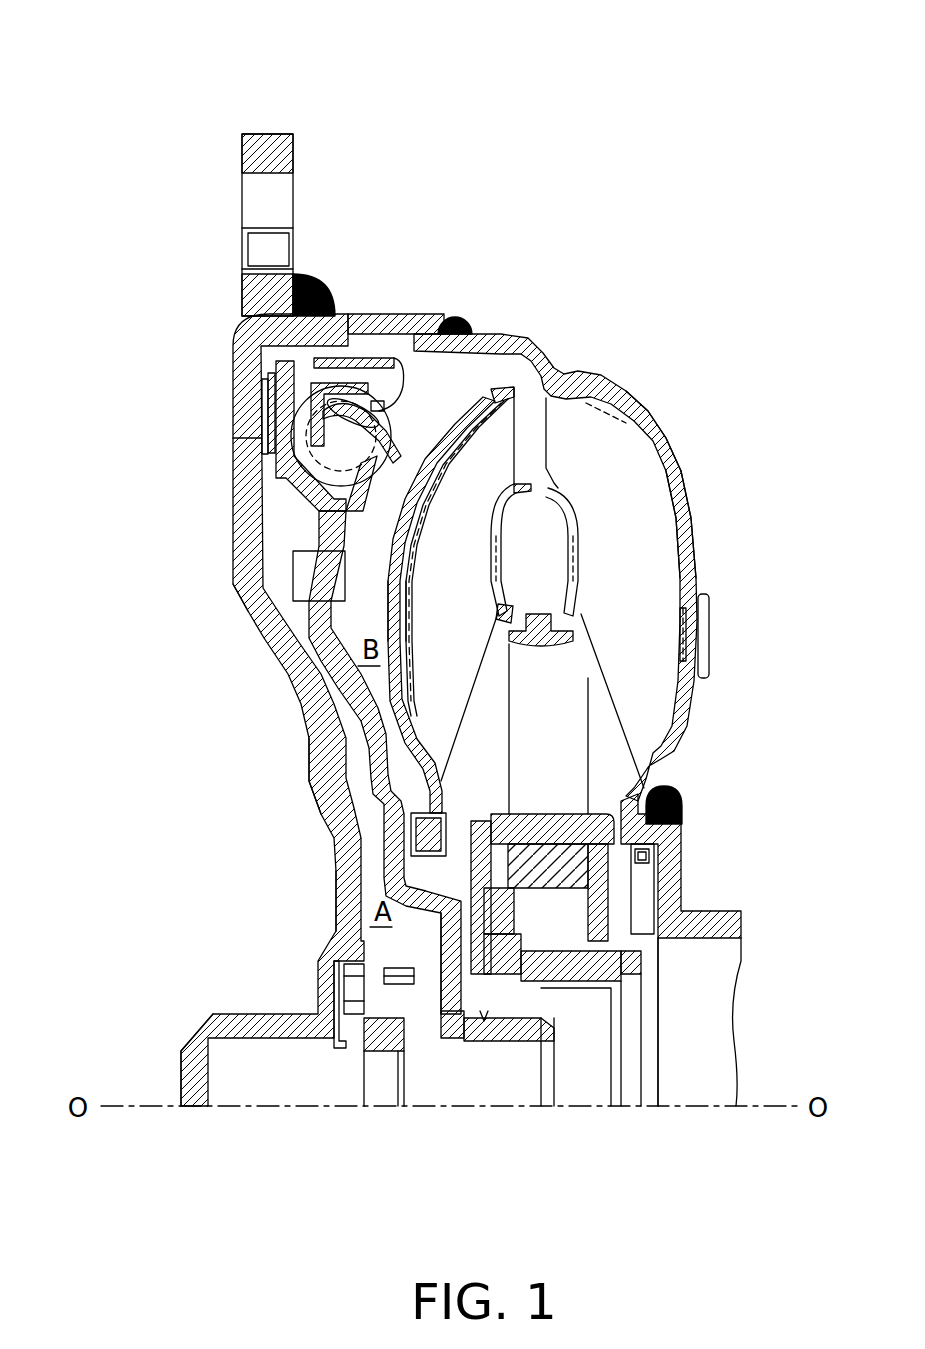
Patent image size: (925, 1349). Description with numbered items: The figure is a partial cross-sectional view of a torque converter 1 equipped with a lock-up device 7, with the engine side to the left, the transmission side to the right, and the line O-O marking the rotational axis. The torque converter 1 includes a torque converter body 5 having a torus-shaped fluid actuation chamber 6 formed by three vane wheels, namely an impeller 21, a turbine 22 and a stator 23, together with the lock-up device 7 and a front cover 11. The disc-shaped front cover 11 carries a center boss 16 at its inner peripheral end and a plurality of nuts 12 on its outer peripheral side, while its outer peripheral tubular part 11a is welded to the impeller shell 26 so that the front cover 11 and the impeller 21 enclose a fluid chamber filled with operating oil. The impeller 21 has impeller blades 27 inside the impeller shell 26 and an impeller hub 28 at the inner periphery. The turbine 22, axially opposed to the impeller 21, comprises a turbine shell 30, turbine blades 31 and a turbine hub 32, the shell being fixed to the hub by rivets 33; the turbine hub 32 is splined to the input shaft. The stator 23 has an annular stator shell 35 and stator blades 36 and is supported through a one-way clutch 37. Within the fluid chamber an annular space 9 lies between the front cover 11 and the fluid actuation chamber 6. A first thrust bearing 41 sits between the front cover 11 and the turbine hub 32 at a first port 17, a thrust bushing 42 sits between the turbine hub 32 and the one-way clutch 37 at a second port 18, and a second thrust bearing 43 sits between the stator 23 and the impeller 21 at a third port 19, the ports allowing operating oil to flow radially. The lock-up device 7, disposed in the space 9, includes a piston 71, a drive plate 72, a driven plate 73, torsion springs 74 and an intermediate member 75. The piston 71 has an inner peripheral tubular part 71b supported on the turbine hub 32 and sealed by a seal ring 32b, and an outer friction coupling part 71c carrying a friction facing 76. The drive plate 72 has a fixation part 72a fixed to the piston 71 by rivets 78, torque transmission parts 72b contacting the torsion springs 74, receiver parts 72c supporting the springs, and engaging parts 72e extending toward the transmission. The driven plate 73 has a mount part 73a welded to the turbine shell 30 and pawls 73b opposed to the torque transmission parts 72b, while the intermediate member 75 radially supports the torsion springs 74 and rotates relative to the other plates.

The torque converter 1 is at (571, 79).
The torque converter body 5 is at (661, 247).
The fluid actuation chamber 6 is at (671, 345).
The lock-up device 7 is at (392, 337).
The annular space 9 is at (344, 764).
The front cover 11 is at (233, 553).
The outer peripheral tubular part 11a is at (330, 377).
The nut 12 is at (283, 133).
The center boss 16 is at (262, 1055).
The first port 17 is at (343, 1066).
The second port 18 is at (495, 1025).
The third port 19 is at (655, 976).
The impeller 21 is at (687, 483).
The turbine 22 is at (522, 340).
The stator 23 is at (608, 735).
The impeller shell 26 is at (650, 437).
The impeller blade 27 is at (655, 545).
The impeller hub 28 is at (708, 908).
The turbine shell 30 is at (512, 368).
The turbine blade 31 is at (490, 613).
The turbine hub 32 is at (450, 1050).
The seal ring 32b is at (397, 978).
The rivet 33 is at (427, 818).
The stator shell 35 is at (672, 806).
The stator blade 36 is at (597, 693).
The one-way clutch 37 is at (337, 853).
The first thrust bearing 41 is at (350, 995).
The thrust bushing 42 is at (487, 1020).
The second thrust bearing 43 is at (645, 888).
The piston 71 is at (233, 527).
The inner peripheral tubular part 71b is at (393, 952).
The friction coupling part 71c is at (230, 383).
The drive plate 72 is at (400, 567).
The fixation part 72a is at (392, 612).
The torque transmission part 72b is at (385, 467).
The receiver part 72c is at (268, 546).
The engaging part 72e is at (388, 493).
The driven plate 73 is at (424, 431).
The mount part 73a is at (395, 583).
The pawl 73b is at (348, 380).
The torsion spring 74 is at (232, 437).
The intermediate member 75 is at (301, 361).
The friction facing 76 is at (267, 392).
The rivet 78 is at (243, 610).